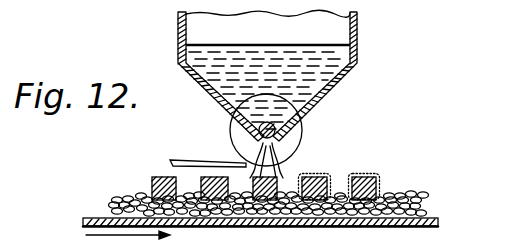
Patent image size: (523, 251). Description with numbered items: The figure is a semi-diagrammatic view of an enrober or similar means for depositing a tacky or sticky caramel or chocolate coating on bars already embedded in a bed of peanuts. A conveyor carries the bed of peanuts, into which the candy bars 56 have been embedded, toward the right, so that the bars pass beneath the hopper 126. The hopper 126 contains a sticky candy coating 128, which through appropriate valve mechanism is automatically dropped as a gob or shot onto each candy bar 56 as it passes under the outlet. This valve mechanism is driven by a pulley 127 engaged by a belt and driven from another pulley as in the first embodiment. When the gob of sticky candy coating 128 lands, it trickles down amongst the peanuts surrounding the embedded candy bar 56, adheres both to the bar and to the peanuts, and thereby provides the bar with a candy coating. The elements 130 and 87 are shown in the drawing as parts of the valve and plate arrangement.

The hopper 126 is at (357, 34).
The sticky candy coating 128 is at (338, 81).
The valve ball 130 is at (272, 128).
The pulley 127 is at (240, 143).
The plate 87 is at (170, 160).
The candy bars 56 is at (365, 173).